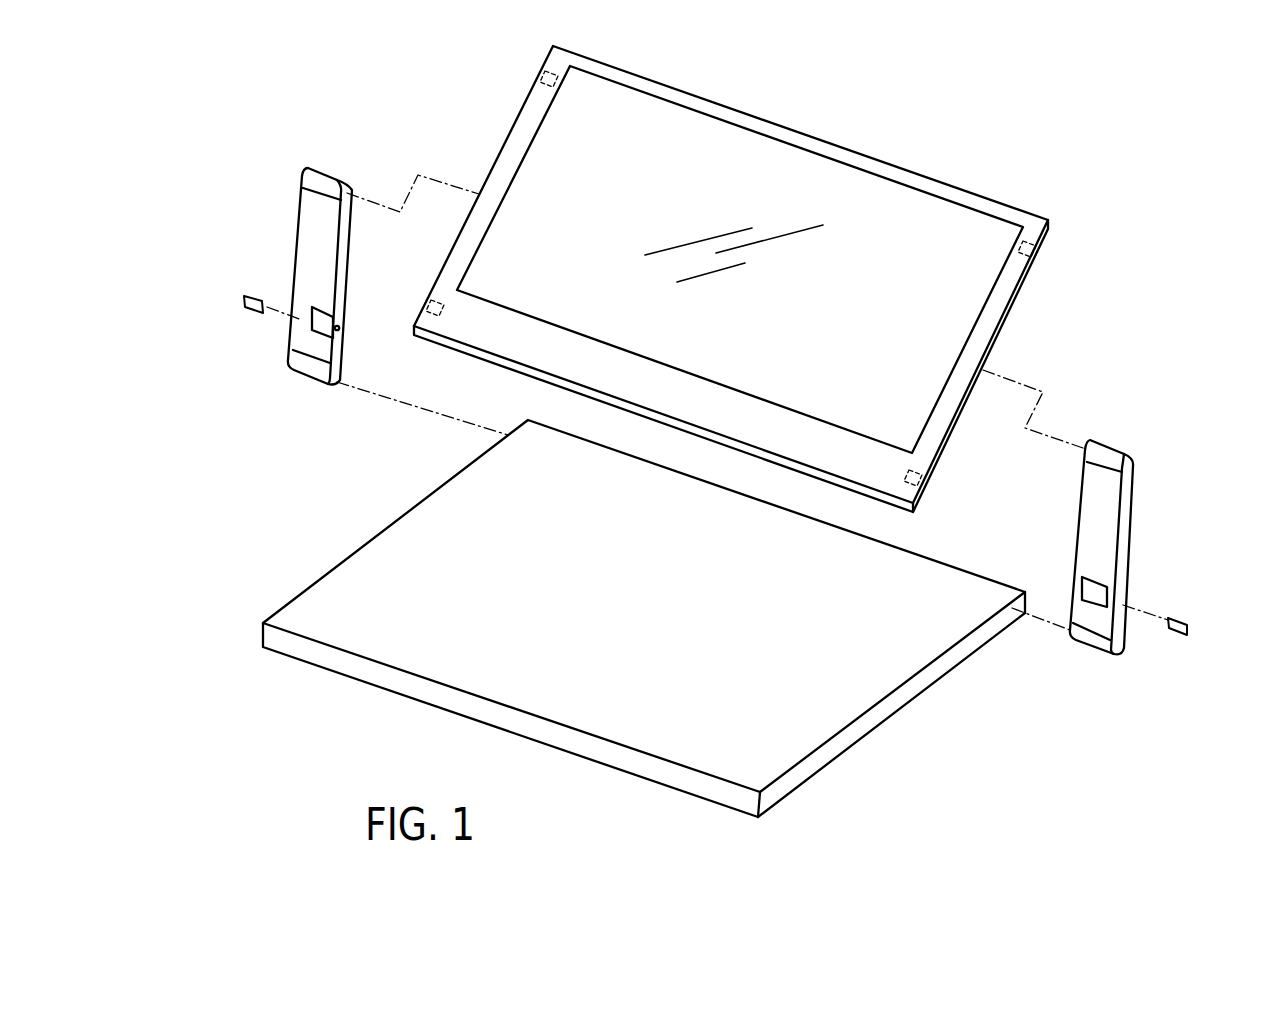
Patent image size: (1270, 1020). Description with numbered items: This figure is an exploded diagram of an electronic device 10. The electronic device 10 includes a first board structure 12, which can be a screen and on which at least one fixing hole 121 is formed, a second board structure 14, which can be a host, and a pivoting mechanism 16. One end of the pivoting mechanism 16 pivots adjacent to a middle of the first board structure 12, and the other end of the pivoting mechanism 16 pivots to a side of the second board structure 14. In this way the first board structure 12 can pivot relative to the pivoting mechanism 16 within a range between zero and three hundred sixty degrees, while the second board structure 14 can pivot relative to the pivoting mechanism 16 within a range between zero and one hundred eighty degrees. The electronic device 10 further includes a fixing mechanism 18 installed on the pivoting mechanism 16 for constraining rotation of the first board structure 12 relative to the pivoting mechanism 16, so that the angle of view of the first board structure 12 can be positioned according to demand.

The electronic device 10 is at (1118, 163).
The first board structure 12 is at (945, 213).
The fixing hole 121 is at (540, 73).
The second board structure 14 is at (835, 707).
The pivoting mechanism 16 is at (312, 210).
The fixing mechanism 18 is at (244, 300).